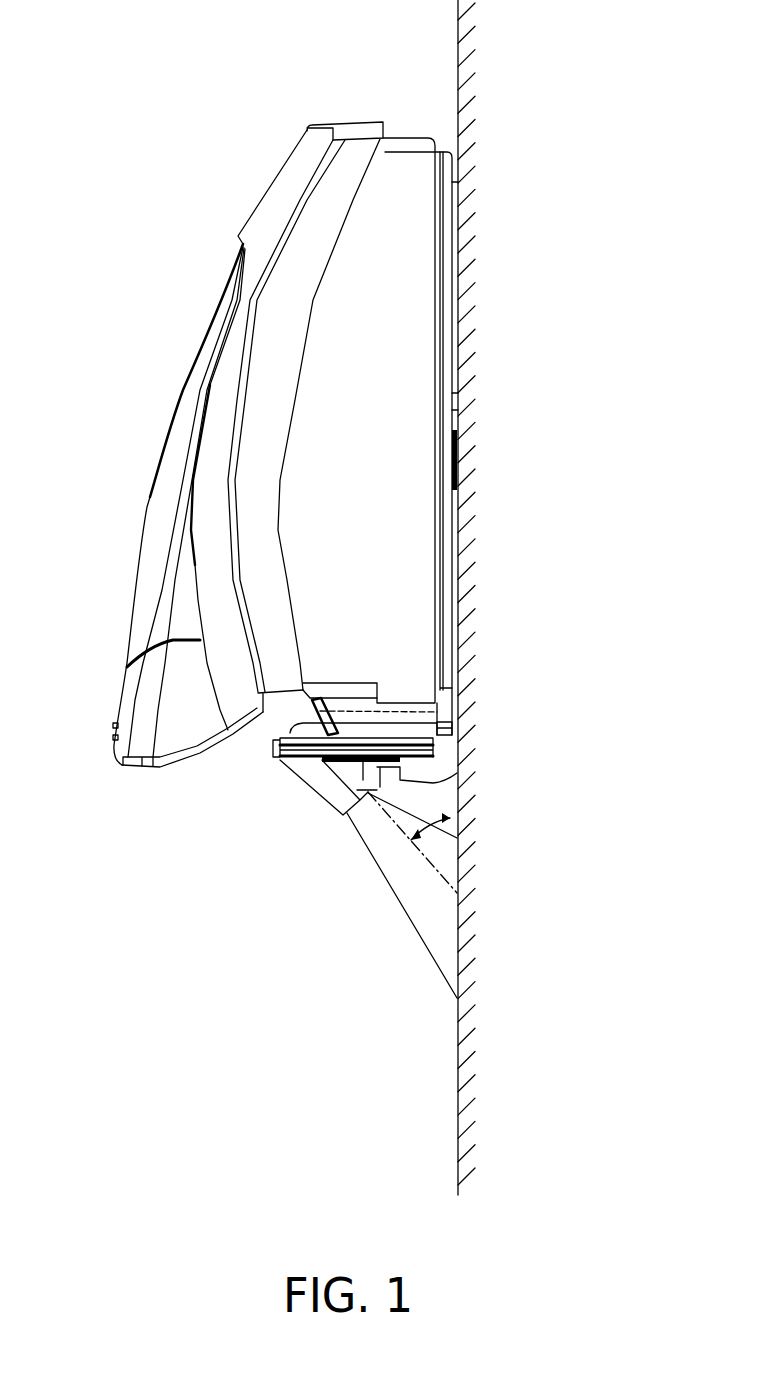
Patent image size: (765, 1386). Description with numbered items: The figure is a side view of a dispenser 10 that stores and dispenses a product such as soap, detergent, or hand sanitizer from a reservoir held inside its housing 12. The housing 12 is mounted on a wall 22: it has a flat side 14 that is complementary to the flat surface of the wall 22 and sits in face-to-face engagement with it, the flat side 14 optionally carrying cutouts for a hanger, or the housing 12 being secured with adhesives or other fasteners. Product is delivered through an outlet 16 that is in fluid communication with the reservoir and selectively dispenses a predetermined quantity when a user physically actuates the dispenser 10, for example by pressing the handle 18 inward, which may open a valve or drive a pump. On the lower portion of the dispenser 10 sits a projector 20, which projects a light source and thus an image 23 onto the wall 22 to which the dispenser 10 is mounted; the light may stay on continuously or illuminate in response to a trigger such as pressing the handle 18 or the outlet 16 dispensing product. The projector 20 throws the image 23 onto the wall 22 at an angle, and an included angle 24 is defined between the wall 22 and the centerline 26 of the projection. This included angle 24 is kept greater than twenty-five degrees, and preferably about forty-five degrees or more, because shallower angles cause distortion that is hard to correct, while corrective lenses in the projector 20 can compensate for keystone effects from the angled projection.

The dispenser 10 is at (310, 565).
The housing 12 is at (440, 353).
The flat side 14 is at (455, 484).
The outlet 16 is at (247, 740).
The handle 18 is at (118, 720).
The projector 20 is at (397, 782).
The wall 22 is at (458, 116).
The image 23 is at (468, 967).
The included angle 24 is at (458, 843).
The centerline 26 is at (402, 843).